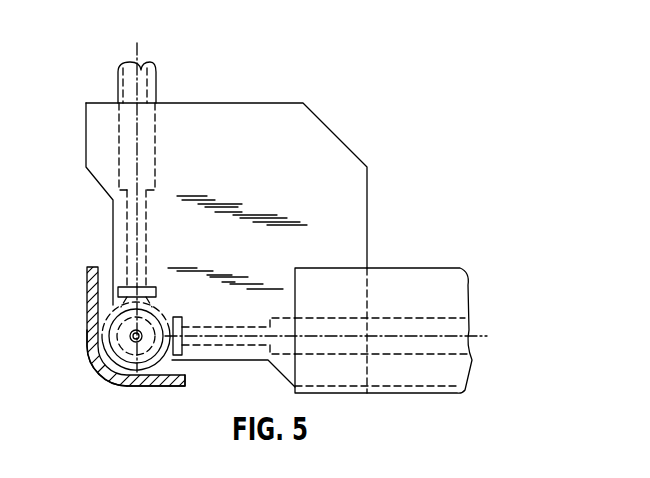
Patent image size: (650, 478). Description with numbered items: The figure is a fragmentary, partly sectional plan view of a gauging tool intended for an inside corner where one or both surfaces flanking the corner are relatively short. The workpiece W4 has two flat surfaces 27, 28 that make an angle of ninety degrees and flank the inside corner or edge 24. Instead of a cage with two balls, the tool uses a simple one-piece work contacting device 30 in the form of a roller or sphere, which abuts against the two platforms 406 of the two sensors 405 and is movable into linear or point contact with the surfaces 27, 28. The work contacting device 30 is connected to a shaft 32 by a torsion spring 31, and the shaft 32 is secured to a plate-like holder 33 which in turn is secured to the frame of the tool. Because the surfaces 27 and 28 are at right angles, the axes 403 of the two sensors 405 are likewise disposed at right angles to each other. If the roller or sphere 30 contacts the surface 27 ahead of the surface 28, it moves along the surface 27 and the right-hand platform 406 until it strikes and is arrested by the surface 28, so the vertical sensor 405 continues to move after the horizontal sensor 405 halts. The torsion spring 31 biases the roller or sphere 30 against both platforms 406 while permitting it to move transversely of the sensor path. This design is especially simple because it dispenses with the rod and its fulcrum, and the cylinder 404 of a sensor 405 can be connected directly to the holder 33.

The axis 403 is at (138, 49).
The cylinder 404 is at (156, 125).
The sensor 405 is at (155, 198).
The platform 406 is at (157, 294).
The plate-like holder 33 is at (152, 227).
The shaft 32 is at (132, 331).
The flat surface 27 is at (103, 324).
The inside corner or edge 24 is at (97, 369).
The work contacting device 30 is at (105, 387).
The flat surface 28 is at (153, 387).
The torsion spring 31 is at (158, 350).
The workpiece W4 is at (84, 276).